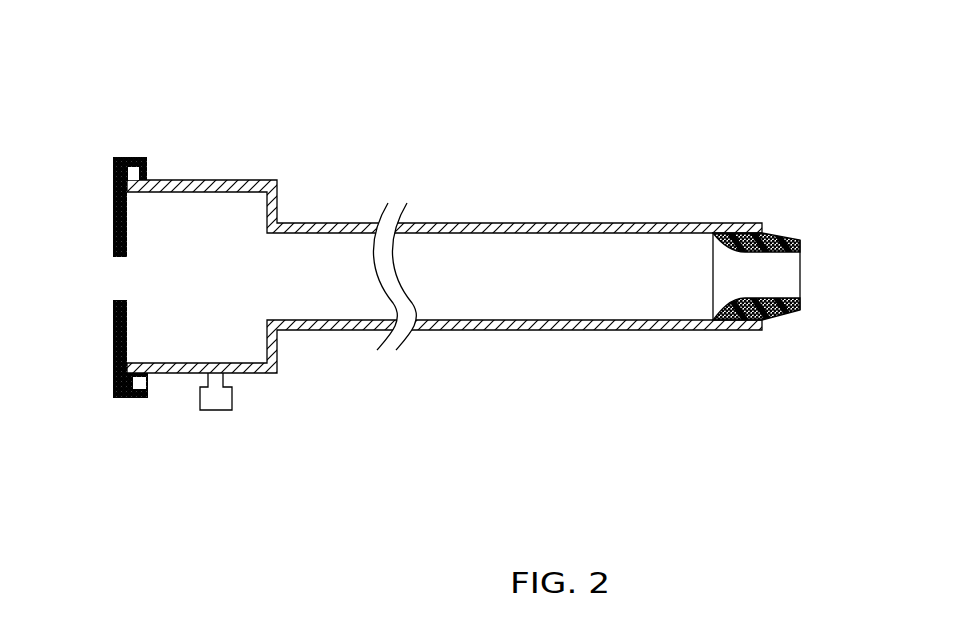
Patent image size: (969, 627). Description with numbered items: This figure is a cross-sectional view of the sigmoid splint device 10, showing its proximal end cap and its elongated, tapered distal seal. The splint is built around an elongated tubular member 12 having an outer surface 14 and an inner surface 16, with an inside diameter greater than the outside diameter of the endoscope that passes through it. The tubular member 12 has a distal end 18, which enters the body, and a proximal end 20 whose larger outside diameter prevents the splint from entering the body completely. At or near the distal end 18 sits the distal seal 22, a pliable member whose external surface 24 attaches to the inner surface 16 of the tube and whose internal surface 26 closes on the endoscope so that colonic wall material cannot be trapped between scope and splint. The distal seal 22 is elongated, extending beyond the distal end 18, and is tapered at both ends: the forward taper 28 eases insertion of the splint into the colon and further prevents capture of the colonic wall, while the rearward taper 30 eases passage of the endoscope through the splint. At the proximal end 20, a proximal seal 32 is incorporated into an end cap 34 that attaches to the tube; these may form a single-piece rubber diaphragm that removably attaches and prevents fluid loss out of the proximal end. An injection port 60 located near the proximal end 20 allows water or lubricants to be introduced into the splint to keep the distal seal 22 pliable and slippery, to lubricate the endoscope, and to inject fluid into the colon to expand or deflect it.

The sigmoid splint device 10 is at (456, 170).
The elongated tubular member 12 is at (463, 332).
The outer surface 14 is at (583, 330).
The inner surface 16 is at (530, 318).
The distal end 18 is at (695, 218).
The proximal end 20 is at (265, 377).
The distal seal 22 is at (753, 327).
The external surface 24 is at (795, 310).
The internal surface 26 is at (762, 255).
The forward taper 28 is at (798, 238).
The rearward taper 30 is at (713, 298).
The proximal seal 32 is at (115, 198).
The end cap 34 is at (130, 148).
The injection port 60 is at (220, 415).